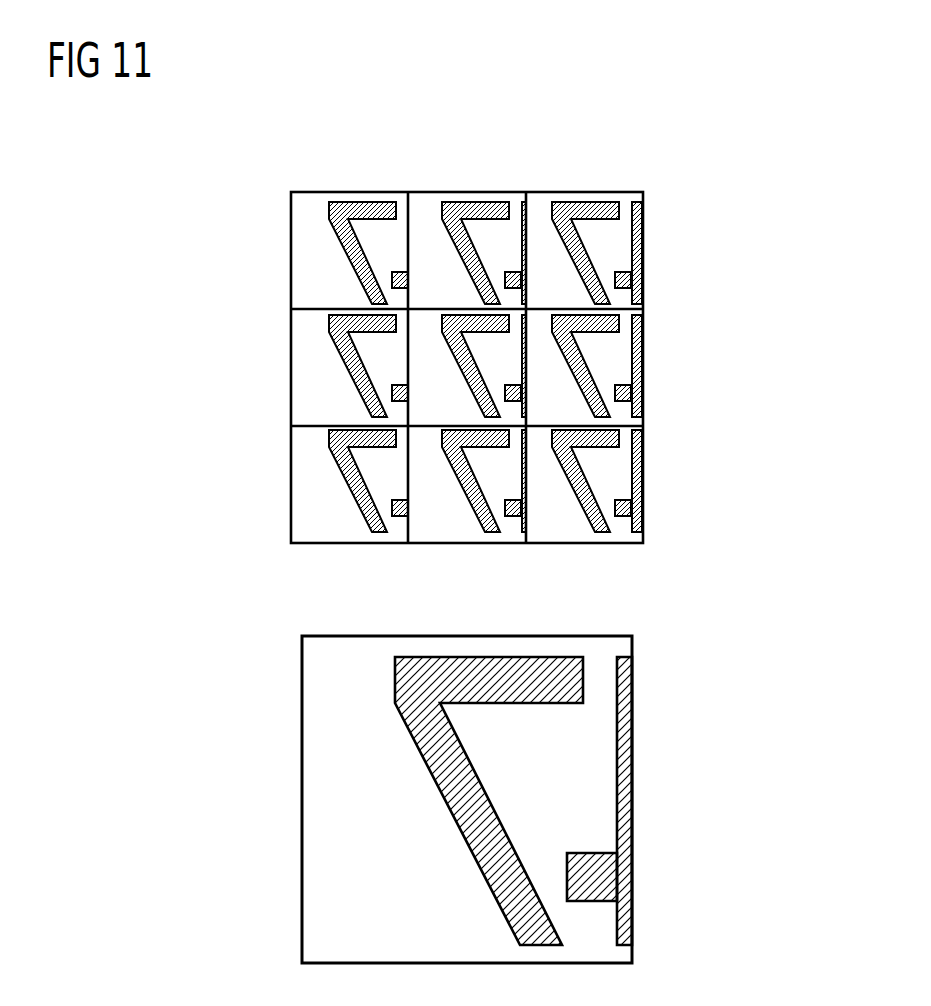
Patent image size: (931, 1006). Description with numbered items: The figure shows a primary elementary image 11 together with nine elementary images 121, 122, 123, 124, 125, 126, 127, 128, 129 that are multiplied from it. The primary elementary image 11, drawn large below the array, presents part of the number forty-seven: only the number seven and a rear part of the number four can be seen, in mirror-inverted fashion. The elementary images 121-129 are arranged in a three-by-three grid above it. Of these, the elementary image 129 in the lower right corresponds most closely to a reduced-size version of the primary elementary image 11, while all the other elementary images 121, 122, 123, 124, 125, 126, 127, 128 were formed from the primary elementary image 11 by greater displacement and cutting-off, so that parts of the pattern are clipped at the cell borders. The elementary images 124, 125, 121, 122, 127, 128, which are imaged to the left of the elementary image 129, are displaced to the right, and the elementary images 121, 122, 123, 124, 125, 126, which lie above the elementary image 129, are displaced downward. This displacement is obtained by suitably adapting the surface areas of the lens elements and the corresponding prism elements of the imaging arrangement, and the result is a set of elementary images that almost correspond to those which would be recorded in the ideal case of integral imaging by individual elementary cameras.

The primary elementary image 11 is at (654, 793).
The elementary image 121 is at (320, 372).
The elementary image 122 is at (425, 363).
The elementary image 123 is at (613, 354).
The elementary image 124 is at (320, 253).
The elementary image 125 is at (428, 256).
The elementary image 126 is at (613, 237).
The elementary image 127 is at (320, 488).
The elementary image 128 is at (442, 508).
The elementary image 129 is at (613, 470).